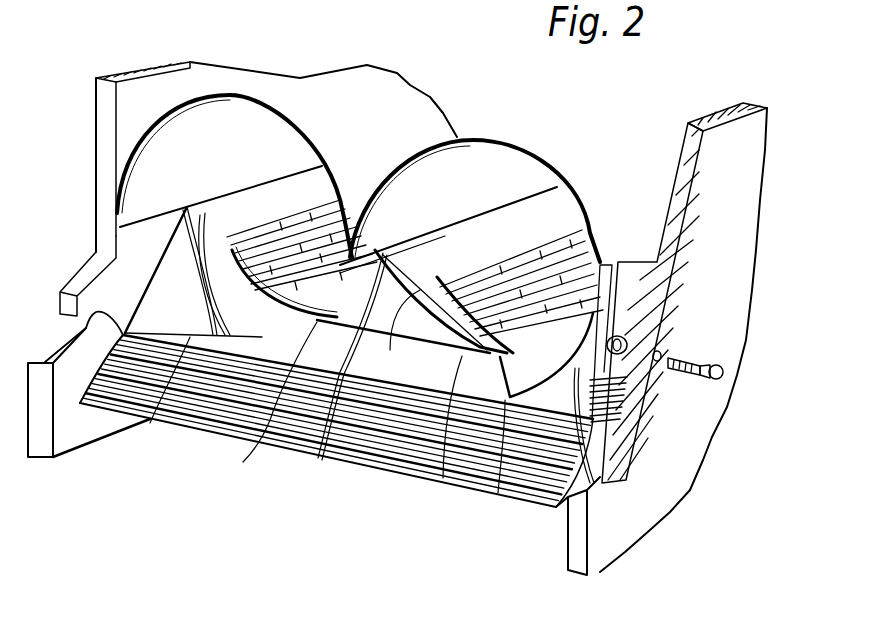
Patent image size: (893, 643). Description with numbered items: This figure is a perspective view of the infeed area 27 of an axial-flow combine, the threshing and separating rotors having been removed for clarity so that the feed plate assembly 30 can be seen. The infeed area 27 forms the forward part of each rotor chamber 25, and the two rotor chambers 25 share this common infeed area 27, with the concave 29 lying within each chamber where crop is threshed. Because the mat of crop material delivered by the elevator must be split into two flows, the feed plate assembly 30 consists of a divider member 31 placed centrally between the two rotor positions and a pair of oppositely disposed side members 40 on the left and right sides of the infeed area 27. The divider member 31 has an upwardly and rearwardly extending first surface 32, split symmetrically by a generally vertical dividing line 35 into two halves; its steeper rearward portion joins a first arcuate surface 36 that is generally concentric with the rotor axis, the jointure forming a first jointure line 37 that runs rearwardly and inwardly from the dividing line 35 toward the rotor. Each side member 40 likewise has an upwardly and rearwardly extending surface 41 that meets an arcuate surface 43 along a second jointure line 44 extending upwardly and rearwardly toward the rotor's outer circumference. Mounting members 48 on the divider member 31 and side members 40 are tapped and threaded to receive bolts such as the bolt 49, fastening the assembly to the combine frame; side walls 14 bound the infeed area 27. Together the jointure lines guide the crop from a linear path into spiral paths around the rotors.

The end wall 14 is at (133, 107).
The rotor chamber 25 is at (258, 131).
The infeed area 27 is at (173, 433).
The concave 29 is at (293, 227).
The feed plate assembly 30 is at (135, 278).
The divider member 31 is at (287, 460).
The first surface 32 is at (267, 433).
The dividing line 35 is at (323, 460).
The first arcuate surface 36 is at (420, 290).
The first jointure line 37 is at (290, 467).
The side member 40 is at (168, 272).
The upwardly and rearwardly extending surface 41 is at (150, 317).
The arcuate surface 43 is at (203, 245).
The second jointure line 44 is at (148, 422).
The mounting member 48 is at (622, 331).
The bolt 49 is at (724, 373).